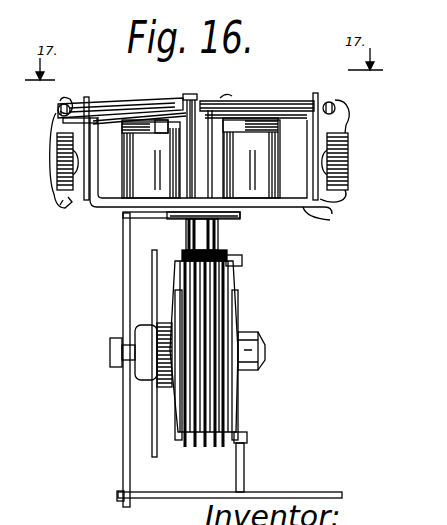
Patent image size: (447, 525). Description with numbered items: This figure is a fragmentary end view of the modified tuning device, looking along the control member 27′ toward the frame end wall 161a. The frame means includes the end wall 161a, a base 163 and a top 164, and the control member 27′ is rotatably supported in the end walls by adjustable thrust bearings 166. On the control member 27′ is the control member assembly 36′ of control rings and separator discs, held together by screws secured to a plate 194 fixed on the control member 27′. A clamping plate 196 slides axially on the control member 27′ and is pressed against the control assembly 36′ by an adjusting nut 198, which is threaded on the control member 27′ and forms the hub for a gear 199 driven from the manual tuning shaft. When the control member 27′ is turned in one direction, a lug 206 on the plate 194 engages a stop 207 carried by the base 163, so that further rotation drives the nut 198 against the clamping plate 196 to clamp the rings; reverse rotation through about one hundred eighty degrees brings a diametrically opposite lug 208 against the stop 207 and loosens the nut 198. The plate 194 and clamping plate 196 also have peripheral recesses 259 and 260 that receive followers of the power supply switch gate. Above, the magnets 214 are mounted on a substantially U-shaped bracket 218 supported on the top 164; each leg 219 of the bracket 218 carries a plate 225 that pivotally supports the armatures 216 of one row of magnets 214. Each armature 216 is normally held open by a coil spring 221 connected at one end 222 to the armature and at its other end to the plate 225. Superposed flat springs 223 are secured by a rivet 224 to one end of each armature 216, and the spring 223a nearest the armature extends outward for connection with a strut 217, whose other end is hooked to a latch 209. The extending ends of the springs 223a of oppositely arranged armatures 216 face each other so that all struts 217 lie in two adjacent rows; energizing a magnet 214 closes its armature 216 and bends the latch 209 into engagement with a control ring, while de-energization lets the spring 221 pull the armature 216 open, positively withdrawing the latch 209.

The end wall 161a is at (125, 424).
The base 163 is at (328, 492).
The top 164 is at (138, 214).
The adjustable thrust bearing 166 is at (122, 363).
The plate 194 is at (236, 293).
The clamping plate 196 is at (180, 273).
The adjusting nut 198 is at (155, 383).
The gear 199 is at (155, 291).
The lug 206 is at (248, 434).
The stop 207 is at (246, 459).
The lug 208 is at (238, 266).
The latch 209 is at (219, 233).
The magnet 214 is at (132, 186).
The armature 216 is at (142, 114).
The strut 217 is at (226, 98).
The bracket 218 is at (305, 208).
The leg 219 is at (93, 140).
The coil spring 221 is at (53, 184).
The end 222 is at (59, 109).
The flat spring 223 is at (112, 106).
The flat spring 223a is at (190, 96).
The rivet 224 is at (71, 102).
The plate 225 is at (334, 105).
The recess 259 is at (234, 319).
The recess 260 is at (178, 314).
The control member 27′ is at (260, 343).
The control member assembly 36′ is at (236, 259).